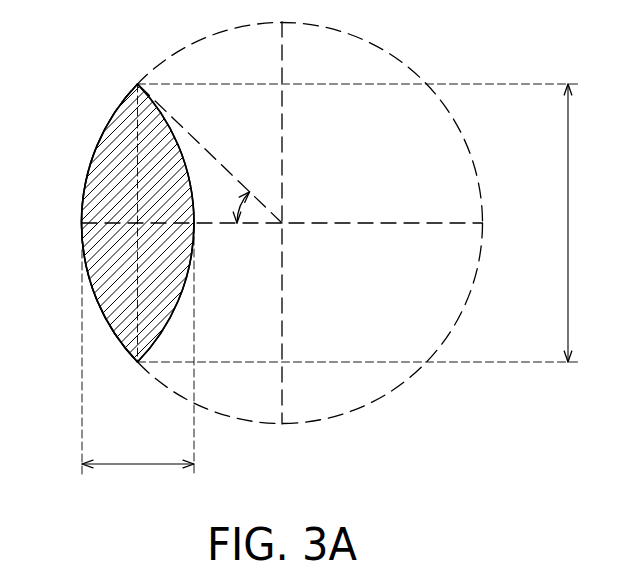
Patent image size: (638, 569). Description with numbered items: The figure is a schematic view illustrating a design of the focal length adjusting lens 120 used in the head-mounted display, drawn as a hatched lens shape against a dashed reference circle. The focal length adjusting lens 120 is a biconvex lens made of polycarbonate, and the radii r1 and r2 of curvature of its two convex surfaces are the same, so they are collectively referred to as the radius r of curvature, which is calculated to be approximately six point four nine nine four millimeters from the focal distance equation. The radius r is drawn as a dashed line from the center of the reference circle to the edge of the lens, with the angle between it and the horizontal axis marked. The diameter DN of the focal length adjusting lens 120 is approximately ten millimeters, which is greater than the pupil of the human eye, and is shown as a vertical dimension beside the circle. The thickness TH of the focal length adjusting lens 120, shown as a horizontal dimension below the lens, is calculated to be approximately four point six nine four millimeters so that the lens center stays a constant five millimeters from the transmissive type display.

The focal length adjusting lens 120 is at (105, 183).
The radius of curvature of first convex surface r1 is at (184, 163).
The radius of curvature of second convex surface r2 is at (96, 148).
The radius of curvature r is at (227, 168).
The diameter of the focal length adjusting lens DN is at (586, 223).
The thickness of the focal length adjusting lens TH is at (138, 481).